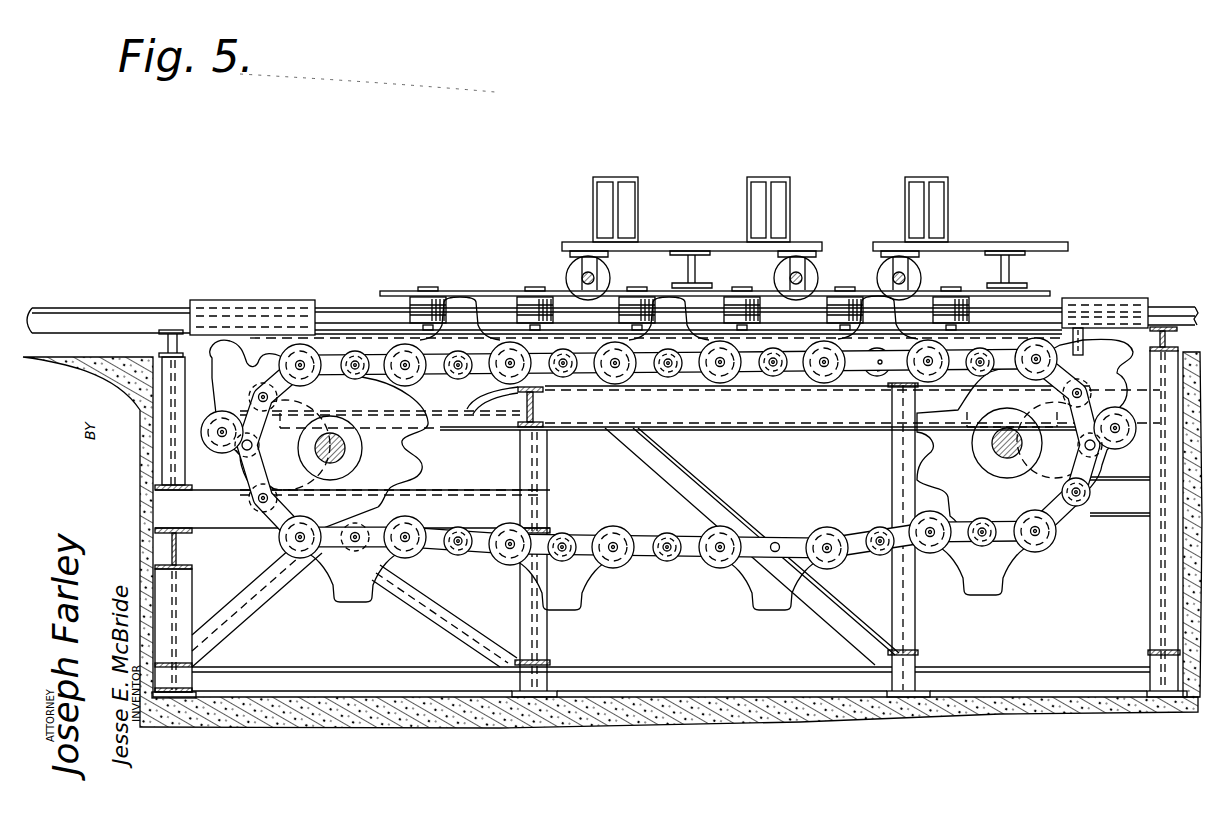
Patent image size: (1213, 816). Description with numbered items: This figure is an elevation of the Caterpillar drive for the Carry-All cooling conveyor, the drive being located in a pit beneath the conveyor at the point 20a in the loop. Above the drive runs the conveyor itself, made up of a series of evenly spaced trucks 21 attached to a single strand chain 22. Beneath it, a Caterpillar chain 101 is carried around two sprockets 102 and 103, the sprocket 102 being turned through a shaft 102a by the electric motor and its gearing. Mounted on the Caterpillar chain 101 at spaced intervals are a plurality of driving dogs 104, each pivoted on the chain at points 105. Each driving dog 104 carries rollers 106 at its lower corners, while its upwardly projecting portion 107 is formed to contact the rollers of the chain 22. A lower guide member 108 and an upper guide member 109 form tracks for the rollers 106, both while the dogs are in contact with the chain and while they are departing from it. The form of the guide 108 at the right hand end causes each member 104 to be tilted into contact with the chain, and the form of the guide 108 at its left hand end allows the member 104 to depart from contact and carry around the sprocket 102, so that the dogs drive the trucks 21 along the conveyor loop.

The Caterpillar drive location 20a is at (637, 690).
The trucks 21 is at (805, 242).
The single strand chain 22 is at (512, 272).
The Caterpillar chain 101 is at (697, 556).
The sprocket 102 is at (335, 438).
The shaft 102a is at (343, 452).
The sprocket 103 is at (945, 457).
The driving dogs 104 is at (500, 382).
The pivot points 105 is at (881, 378).
The rollers 106 is at (812, 376).
The upwardly projecting portion 107 is at (872, 298).
The lower guide member 108 is at (466, 396).
The upper guide member 109 is at (984, 348).